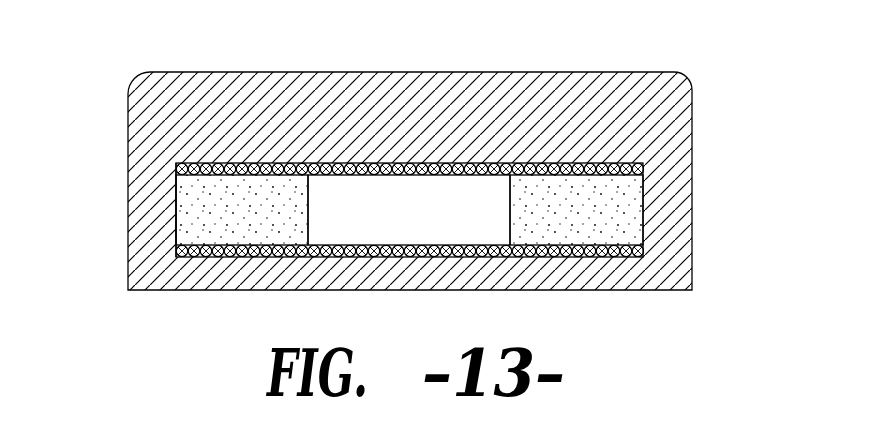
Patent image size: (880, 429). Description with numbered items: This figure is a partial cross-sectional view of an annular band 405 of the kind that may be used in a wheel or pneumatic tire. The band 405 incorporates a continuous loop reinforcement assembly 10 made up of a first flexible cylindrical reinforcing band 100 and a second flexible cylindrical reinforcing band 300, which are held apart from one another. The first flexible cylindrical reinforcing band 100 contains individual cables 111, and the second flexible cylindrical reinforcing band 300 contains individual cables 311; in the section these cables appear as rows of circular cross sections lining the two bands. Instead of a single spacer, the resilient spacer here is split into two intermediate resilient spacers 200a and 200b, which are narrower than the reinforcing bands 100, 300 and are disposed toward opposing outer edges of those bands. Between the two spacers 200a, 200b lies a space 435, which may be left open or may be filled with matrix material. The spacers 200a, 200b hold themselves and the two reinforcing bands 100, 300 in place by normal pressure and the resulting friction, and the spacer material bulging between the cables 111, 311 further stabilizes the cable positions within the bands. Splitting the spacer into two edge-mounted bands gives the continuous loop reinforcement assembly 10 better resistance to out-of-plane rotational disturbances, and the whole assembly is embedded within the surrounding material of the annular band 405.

The continuous loop reinforcement assembly 10 is at (552, 142).
The first flexible cylindrical reinforcing band 100 is at (643, 242).
The second flexible cylindrical reinforcing band 300 is at (663, 164).
The cables 111 is at (240, 258).
The cables 311 is at (232, 162).
The annular band 405 is at (164, 187).
The intermediate resilient spacer 200a is at (549, 206).
The intermediate resilient spacer 200b is at (284, 210).
The space 435 is at (407, 206).